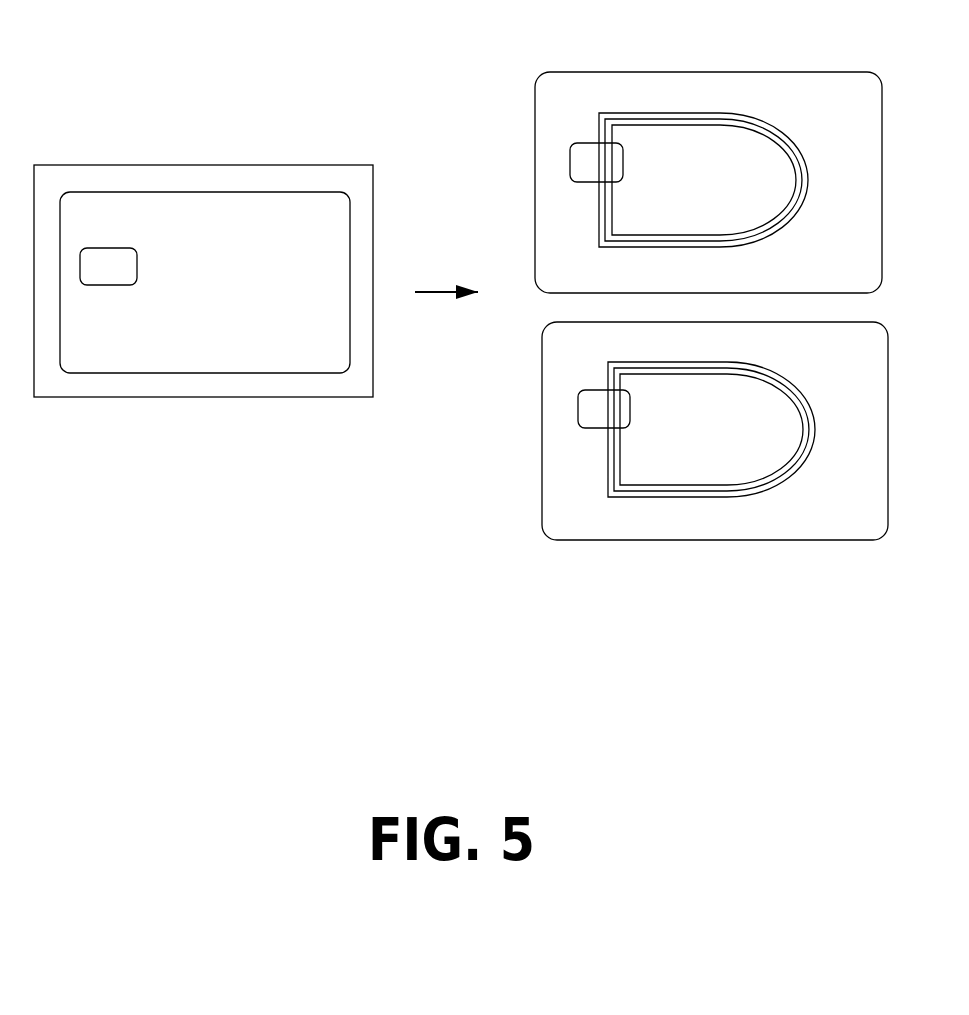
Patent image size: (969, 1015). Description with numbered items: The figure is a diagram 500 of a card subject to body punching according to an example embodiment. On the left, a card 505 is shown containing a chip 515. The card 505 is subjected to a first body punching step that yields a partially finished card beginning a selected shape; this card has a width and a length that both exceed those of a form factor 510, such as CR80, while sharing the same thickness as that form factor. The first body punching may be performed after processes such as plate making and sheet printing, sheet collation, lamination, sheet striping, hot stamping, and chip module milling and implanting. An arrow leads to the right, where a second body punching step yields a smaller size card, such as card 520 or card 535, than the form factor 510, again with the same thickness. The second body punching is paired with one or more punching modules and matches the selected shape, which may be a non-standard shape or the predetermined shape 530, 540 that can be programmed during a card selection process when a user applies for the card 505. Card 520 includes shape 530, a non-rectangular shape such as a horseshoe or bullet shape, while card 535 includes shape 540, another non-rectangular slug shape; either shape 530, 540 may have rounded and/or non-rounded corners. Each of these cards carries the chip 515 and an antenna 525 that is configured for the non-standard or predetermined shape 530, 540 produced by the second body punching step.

The diagram 500 is at (441, 769).
The card 505 is at (147, 396).
The form factor 510 is at (256, 198).
The chip 515 is at (355, 285).
The card 520 is at (672, 61).
The antenna 525 is at (747, 146).
The shape 530 is at (860, 184).
The card 535 is at (657, 556).
The shape 540 is at (867, 441).